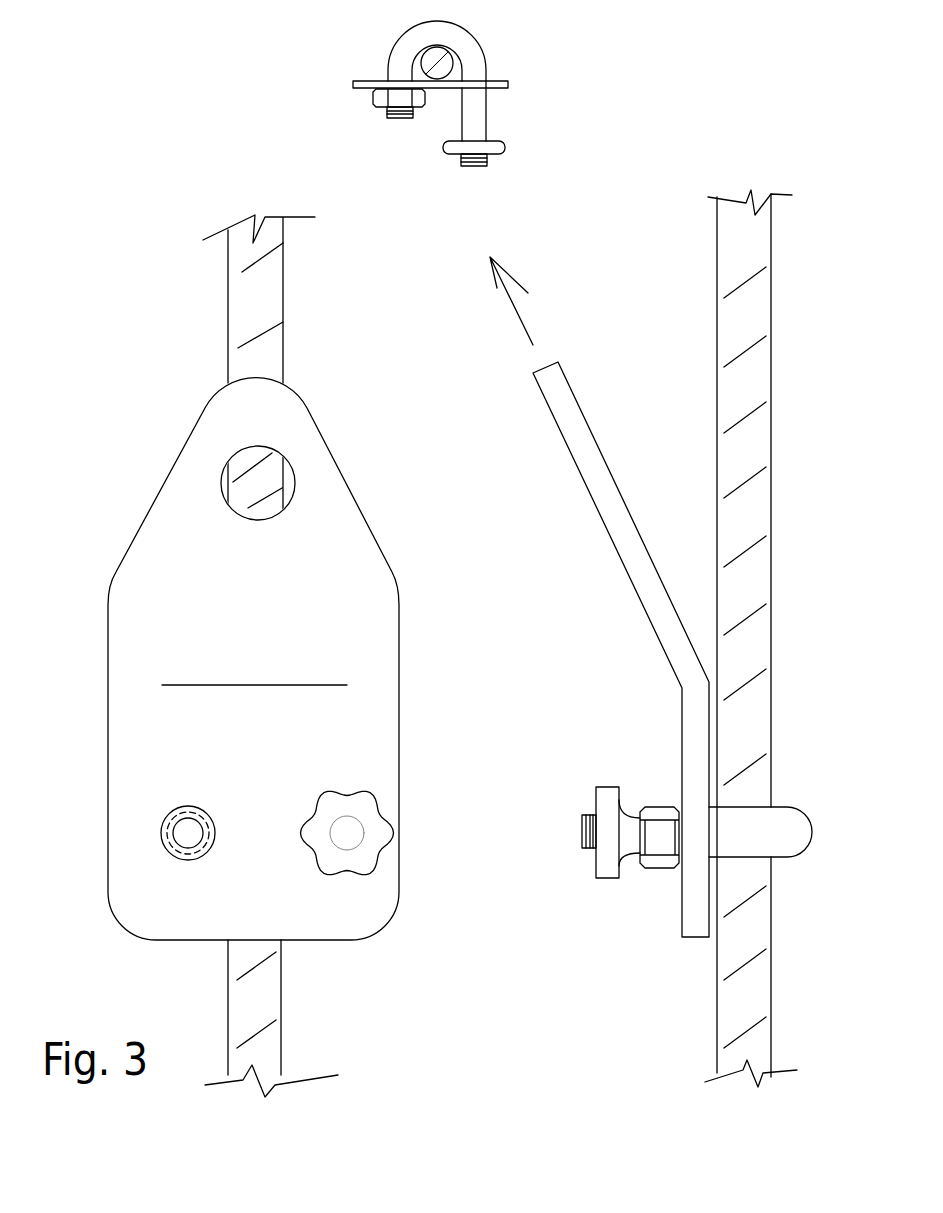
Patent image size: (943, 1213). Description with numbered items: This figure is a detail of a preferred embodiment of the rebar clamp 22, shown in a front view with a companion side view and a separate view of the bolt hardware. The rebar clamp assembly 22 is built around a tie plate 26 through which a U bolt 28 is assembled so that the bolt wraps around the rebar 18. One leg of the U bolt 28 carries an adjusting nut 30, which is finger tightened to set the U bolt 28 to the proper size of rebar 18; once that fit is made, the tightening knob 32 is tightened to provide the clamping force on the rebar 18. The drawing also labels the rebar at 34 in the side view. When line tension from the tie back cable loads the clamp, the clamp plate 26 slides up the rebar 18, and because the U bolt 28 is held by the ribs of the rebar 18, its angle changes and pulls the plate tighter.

The rebar 18 is at (281, 1033).
The rebar clamp 22 is at (362, 495).
The tie plate 26 is at (503, 87).
The U bolt 28 is at (487, 55).
The adjusting nut 30 is at (373, 105).
The tightening knob 32 is at (505, 153).
The cable core 34 is at (747, 467).